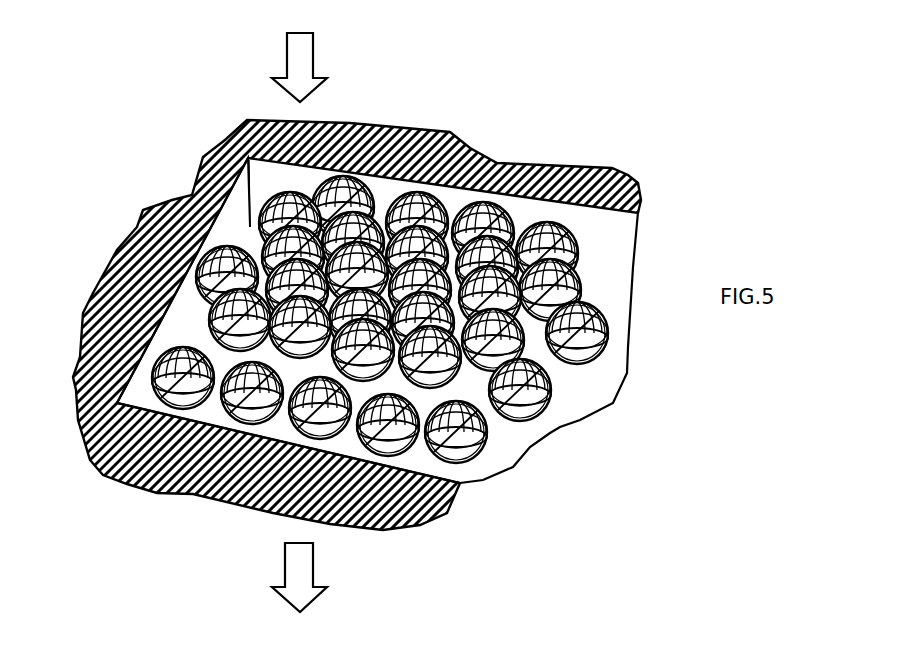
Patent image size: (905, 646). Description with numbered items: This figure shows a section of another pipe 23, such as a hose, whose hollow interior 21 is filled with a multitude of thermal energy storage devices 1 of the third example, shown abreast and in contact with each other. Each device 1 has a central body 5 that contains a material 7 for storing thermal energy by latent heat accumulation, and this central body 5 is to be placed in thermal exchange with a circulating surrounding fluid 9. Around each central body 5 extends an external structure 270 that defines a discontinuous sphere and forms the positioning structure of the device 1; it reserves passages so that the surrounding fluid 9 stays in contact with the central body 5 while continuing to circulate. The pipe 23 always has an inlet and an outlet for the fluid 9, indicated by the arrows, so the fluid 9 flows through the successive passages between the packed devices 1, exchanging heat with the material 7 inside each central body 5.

The device 1 is at (522, 210).
The central body 5 is at (367, 193).
The material for storing thermal energy 7 is at (110, 457).
The surrounding fluid 9 is at (307, 55).
The hollow interior 21 is at (137, 398).
The pipe 23 is at (632, 158).
The external structure 270 is at (262, 215).